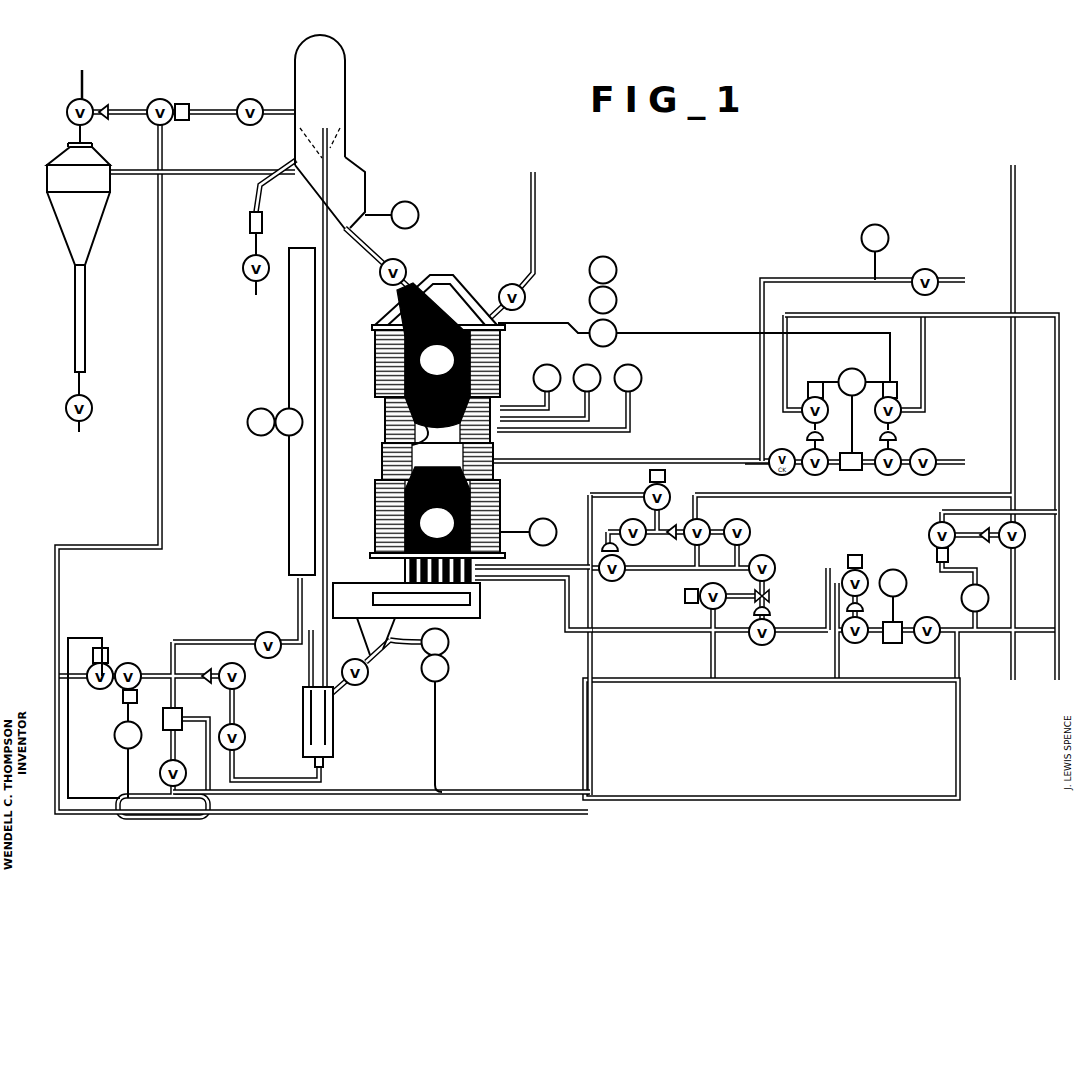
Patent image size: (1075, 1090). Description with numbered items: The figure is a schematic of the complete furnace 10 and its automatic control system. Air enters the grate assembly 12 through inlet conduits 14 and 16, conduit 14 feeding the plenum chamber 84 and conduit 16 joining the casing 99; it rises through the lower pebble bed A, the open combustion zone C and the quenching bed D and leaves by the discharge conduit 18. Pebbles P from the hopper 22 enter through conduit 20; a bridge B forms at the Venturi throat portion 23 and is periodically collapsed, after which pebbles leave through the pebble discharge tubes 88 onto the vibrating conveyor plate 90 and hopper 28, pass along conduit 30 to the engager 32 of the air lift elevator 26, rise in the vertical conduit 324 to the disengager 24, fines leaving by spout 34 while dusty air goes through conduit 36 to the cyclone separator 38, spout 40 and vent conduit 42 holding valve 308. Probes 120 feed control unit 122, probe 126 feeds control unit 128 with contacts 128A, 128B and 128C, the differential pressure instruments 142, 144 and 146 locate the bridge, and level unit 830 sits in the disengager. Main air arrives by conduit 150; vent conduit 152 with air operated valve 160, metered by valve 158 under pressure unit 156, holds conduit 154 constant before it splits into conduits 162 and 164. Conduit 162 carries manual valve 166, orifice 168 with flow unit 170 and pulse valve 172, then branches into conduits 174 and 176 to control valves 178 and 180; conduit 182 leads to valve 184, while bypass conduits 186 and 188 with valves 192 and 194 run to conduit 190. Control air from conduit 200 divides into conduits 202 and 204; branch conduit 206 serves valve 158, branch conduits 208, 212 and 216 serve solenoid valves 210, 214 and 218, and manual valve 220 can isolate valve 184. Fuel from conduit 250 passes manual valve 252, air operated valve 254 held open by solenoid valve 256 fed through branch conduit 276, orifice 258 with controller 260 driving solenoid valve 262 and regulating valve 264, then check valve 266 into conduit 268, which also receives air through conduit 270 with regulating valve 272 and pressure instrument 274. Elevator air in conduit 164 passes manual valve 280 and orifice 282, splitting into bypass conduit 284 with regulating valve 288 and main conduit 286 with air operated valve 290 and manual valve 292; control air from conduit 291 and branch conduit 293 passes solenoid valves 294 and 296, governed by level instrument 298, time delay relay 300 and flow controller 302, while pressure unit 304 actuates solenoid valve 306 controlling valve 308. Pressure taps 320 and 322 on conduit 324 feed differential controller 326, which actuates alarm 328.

The furnace 10 is at (424, 437).
The grate assembly 12 is at (357, 564).
The air inlet conduit 14 is at (532, 553).
The air inlet conduit 16 is at (556, 622).
The discharge conduit 18 is at (526, 245).
The conduit 20 is at (373, 270).
The hopper 22 is at (357, 193).
The Venturi throat portion 23 is at (375, 395).
The disengager 24 is at (350, 100).
The air lift pebble elevator 26 is at (372, 148).
The hopper 28 is at (382, 662).
The conduit 30 is at (364, 716).
The engager 32 is at (345, 727).
The spout 34 is at (247, 227).
The conduit 36 is at (202, 153).
The cyclone separator 38 is at (58, 204).
The spout 40 is at (49, 348).
The vent conduit 42 is at (52, 83).
The plenum chamber 84 is at (417, 574).
The pebble discharge tubes 88 is at (440, 589).
The vibrating conveyor plate 90 is at (406, 619).
The casing 99 is at (515, 554).
The temperature responsive probes 120 is at (522, 511).
The temperature responsive control unit 122 is at (537, 510).
The temperature responsive probe 126 is at (694, 352).
The temperature responsive control unit 128 is at (650, 244).
The normally open contact 128A is at (643, 326).
The double contact 128B is at (643, 298).
The normally closed contact 128C is at (643, 269).
The differential pressure indicating and control mechanism 142 is at (659, 374).
The differential pressure indicator 144 is at (614, 366).
The differential pressure indicator 146 is at (564, 366).
The conduit 150 is at (1027, 646).
The vent conduit 152 is at (1035, 578).
The conduit 154 is at (910, 647).
The pressure responsive unit 156 is at (947, 598).
The solenoid actuated valve 158 is at (919, 542).
The air operated valve 160 is at (989, 546).
The main furnace air supply conduit 162 is at (935, 644).
The air supply conduit 164 is at (529, 702).
The manually operated valve 166 is at (934, 618).
The orifice 168 is at (895, 646).
The flow recording control unit 170 is at (907, 586).
The air operated pulse valve 172 is at (850, 644).
The conduit 174 is at (792, 649).
The conduit 176 is at (781, 601).
The air operated control valve 178 is at (757, 645).
The air operated control valve 180 is at (788, 558).
The conduit 182 is at (656, 586).
The air operated control valve 184 is at (621, 579).
The bypass conduit 186 is at (669, 571).
The bypass conduit 188 is at (781, 535).
The conduit 190 is at (835, 512).
The air actuated control valve 192 is at (707, 521).
The manual valve 194 is at (758, 521).
The control air conduit 200 is at (1027, 702).
The conduit 202 is at (921, 483).
The conduit 204 is at (771, 739).
The branch conduit 206 is at (975, 509).
The branch conduit 208 is at (835, 654).
The solenoid actuated valve 210 is at (878, 573).
The branch conduit 212 is at (677, 661).
The solenoid actuated control valve 214 is at (684, 606).
The branch conduit 216 is at (554, 645).
The solenoid actuated control valve 218 is at (680, 483).
The manual valve 220 is at (618, 525).
The fuel conduit 250 is at (973, 443).
The manually actuated valve 252 is at (946, 471).
The air operated valve 254 is at (863, 473).
The solenoid valve 256 is at (922, 415).
The orifice 258 is at (847, 471).
The flow responsive controller 260 is at (853, 395).
The solenoid valve 262 is at (799, 389).
The air controlled flow regulating valve 264 is at (793, 447).
The check valve 266 is at (759, 471).
The conduit 268 is at (631, 449).
The conduit 270 is at (853, 352).
The manual regulating valve 272 is at (925, 263).
The pressure indicating instrument 274 is at (902, 242).
The branch conduit 276 is at (961, 339).
The manual valve 280 is at (122, 774).
The flow measuring orifice 282 is at (191, 713).
The bypass conduit 284 is at (247, 631).
The conduit 286 is at (201, 665).
The manually settable regulating valve 288 is at (235, 599).
The air operated valve 290 is at (258, 674).
The conduit 291 is at (354, 475).
The manually operated valve 292 is at (258, 724).
The branch conduit 293 is at (94, 718).
The solenoid actuated valve 294 is at (98, 717).
The solenoid actuated valve 296 is at (128, 666).
The level responsive control instrument 298 is at (467, 641).
The time delay relay 300 is at (467, 718).
The flow responsive controller 302 is at (100, 750).
The pressure responsive control unit 304 is at (255, 92).
The solenoid valve 306 is at (170, 92).
The air operated valve 308 is at (54, 121).
The pressure tap 320 is at (305, 436).
The pressure tap 322 is at (255, 581).
The vertical conduit 324 is at (331, 411).
The differential pressure responsive controller 326 is at (263, 402).
The alarm 328 is at (230, 415).
The level responsive control unit 830 is at (426, 209).
The lower pebble bed A is at (428, 535).
The bridge B is at (391, 434).
The open combustion zone C is at (431, 474).
The quenching bed D is at (428, 372).
The pebbles P is at (369, 349).